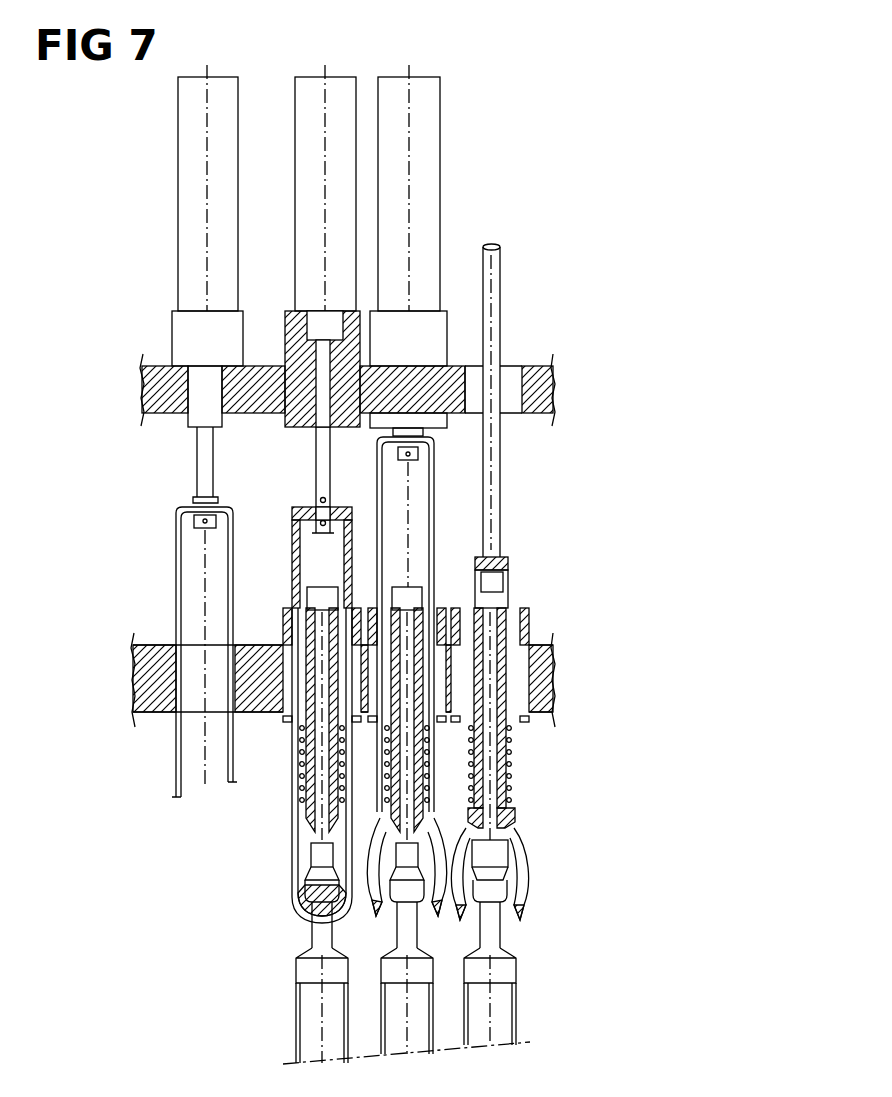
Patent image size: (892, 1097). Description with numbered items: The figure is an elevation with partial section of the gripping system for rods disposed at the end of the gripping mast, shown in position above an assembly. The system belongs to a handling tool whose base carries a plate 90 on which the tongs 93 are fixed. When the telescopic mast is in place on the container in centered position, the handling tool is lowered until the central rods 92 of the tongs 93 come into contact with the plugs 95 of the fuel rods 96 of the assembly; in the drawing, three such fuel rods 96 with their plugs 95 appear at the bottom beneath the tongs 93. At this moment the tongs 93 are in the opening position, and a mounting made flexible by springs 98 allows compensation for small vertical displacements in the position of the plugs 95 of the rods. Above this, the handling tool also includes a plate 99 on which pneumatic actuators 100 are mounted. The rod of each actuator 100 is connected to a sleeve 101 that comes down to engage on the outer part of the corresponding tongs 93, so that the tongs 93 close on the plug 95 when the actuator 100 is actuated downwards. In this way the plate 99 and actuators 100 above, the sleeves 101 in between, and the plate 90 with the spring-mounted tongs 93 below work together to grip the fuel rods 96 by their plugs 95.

The pneumatic actuators 100 is at (392, 195).
The plate 99 is at (530, 370).
The sleeves 101 is at (407, 548).
The plate 90 is at (548, 648).
The tongs 93 is at (298, 778).
The springs 98 is at (298, 795).
The central rods 92 is at (292, 902).
The plugs 95 is at (487, 970).
The fuel rods 96 is at (477, 1023).